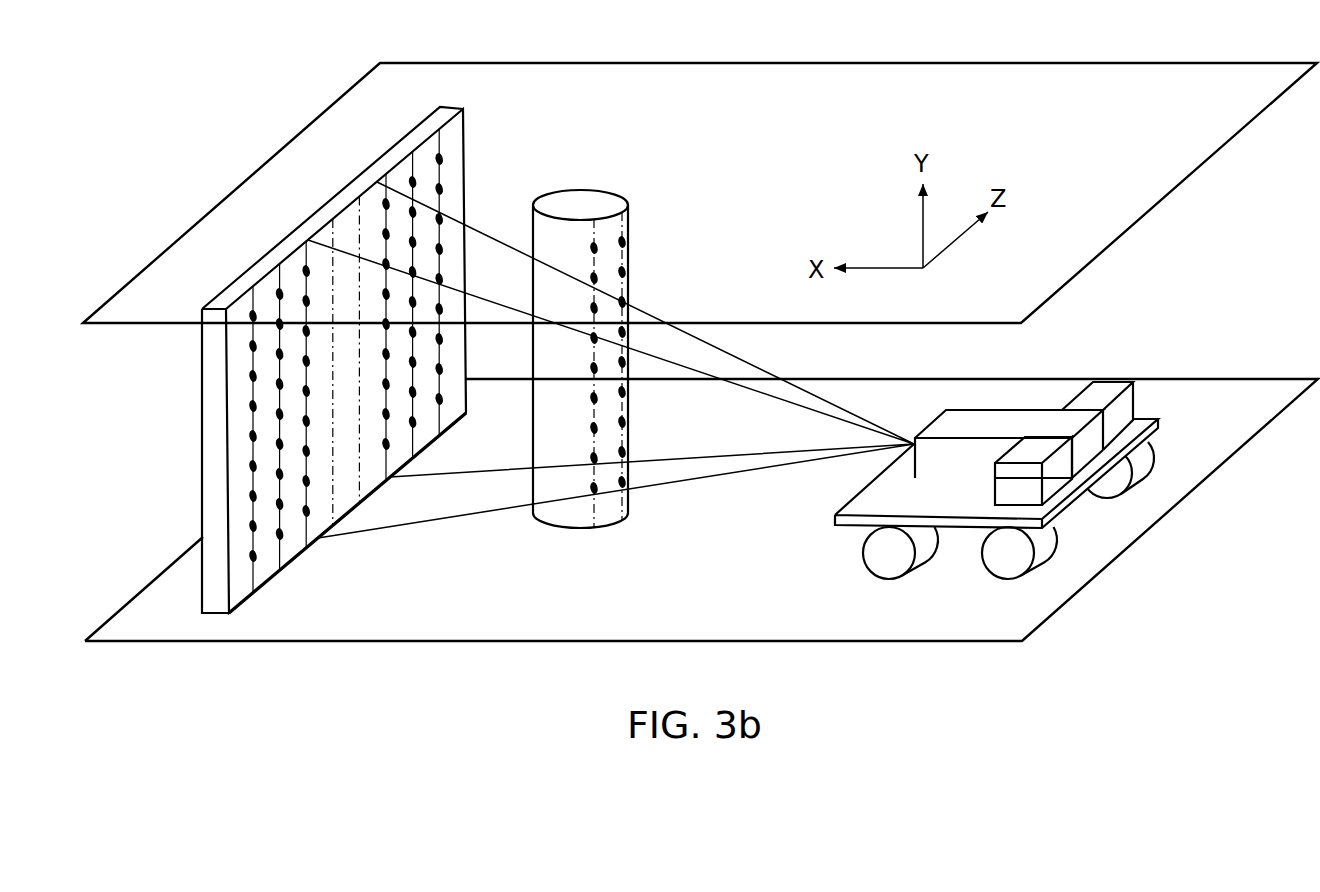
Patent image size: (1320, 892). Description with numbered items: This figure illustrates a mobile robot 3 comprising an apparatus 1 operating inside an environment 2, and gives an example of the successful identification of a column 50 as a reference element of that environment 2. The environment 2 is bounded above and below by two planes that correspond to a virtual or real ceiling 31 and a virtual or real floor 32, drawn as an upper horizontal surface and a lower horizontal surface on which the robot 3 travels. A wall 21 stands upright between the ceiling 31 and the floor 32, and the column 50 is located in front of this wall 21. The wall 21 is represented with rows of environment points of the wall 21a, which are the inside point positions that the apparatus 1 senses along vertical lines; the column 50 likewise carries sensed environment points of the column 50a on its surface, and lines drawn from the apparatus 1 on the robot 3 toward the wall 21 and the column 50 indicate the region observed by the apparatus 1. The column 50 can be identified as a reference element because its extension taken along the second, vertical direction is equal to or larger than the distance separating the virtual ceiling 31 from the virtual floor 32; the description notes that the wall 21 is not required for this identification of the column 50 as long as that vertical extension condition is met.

The apparatus 1 is at (1018, 417).
The environment 2 is at (700, 172).
The robot 3 is at (1011, 435).
The wall 21 is at (301, 350).
The environment points of the wall 21a is at (253, 410).
The ceiling 31 is at (247, 178).
The floor 32 is at (120, 610).
The column 50 is at (592, 364).
The post light source 50a is at (598, 492).